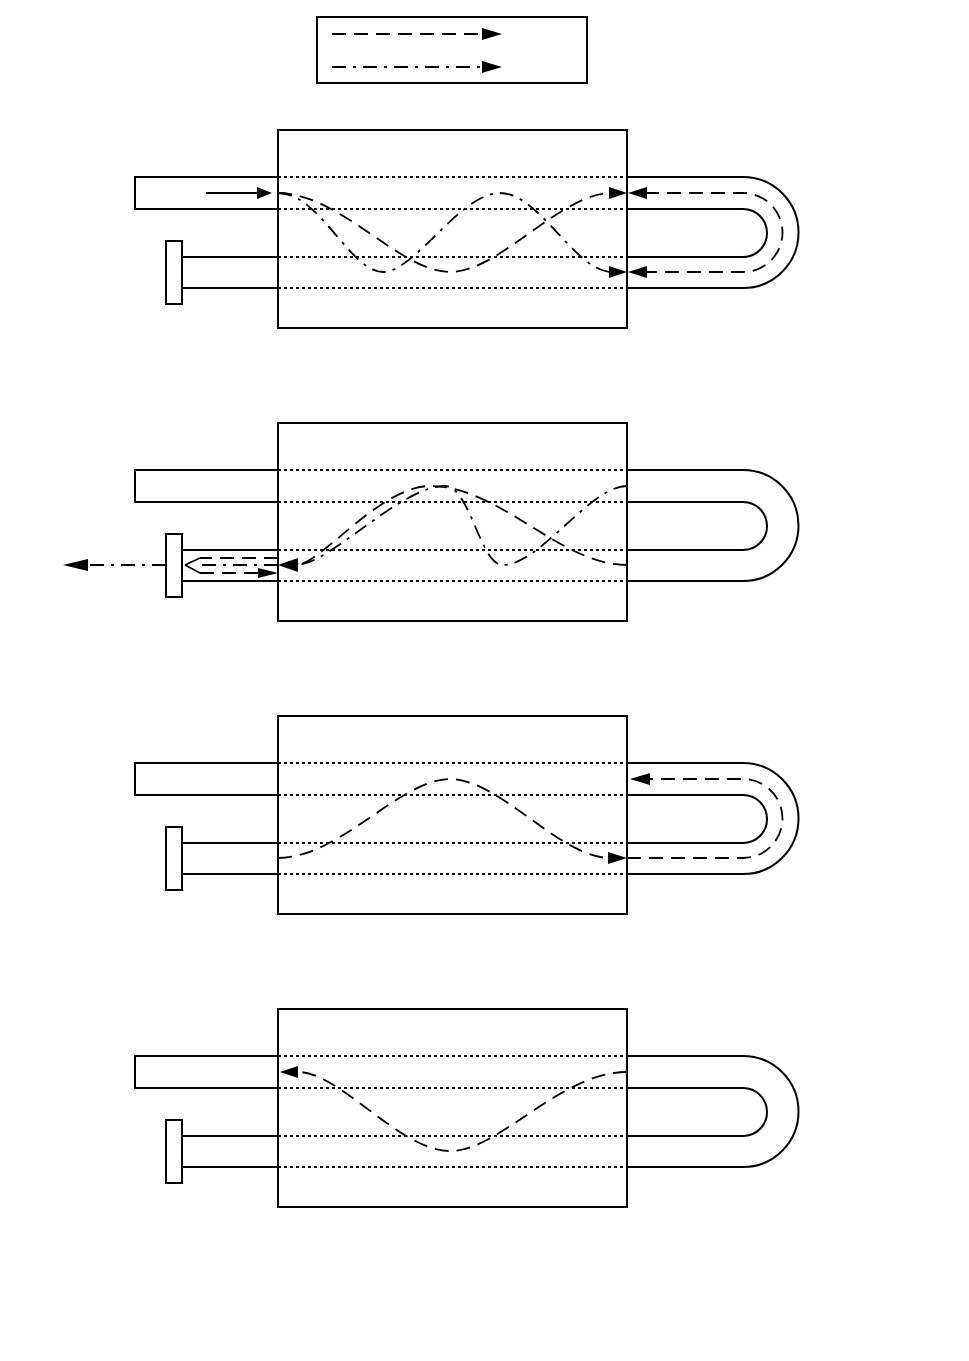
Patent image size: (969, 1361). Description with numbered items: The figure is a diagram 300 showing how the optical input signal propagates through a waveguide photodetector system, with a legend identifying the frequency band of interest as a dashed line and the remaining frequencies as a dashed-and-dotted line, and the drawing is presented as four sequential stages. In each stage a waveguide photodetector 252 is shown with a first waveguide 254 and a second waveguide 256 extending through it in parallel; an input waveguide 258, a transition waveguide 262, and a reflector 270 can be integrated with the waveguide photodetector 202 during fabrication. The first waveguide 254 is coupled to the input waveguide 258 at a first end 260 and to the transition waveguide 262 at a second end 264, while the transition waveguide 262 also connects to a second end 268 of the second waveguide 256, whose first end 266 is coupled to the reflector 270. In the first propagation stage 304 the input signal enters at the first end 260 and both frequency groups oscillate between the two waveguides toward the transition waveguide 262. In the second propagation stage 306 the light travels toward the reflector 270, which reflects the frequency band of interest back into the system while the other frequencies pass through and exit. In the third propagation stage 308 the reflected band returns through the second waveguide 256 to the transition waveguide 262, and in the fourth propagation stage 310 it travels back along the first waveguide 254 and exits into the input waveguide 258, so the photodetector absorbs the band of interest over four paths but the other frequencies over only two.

The diagram 300 is at (123, 39).
The waveguide photodetector 202 is at (317, 42).
The waveguide photodetector 252 is at (292, 130).
The first waveguide 254 is at (357, 177).
The second waveguide 256 is at (302, 288).
The input waveguide 258 is at (152, 177).
The first end of the first waveguide 260 is at (277, 180).
The transition waveguide 262 is at (783, 203).
The second end of the first waveguide 264 is at (628, 182).
The first end of the second waveguide 266 is at (277, 261).
The second end of the second waveguide 268 is at (628, 257).
The reflector 270 is at (177, 304).
The first propagation stage 304 is at (769, 77).
The second propagation stage 306 is at (769, 370).
The third propagation stage 308 is at (769, 663).
The fourth propagation stage 310 is at (769, 956).